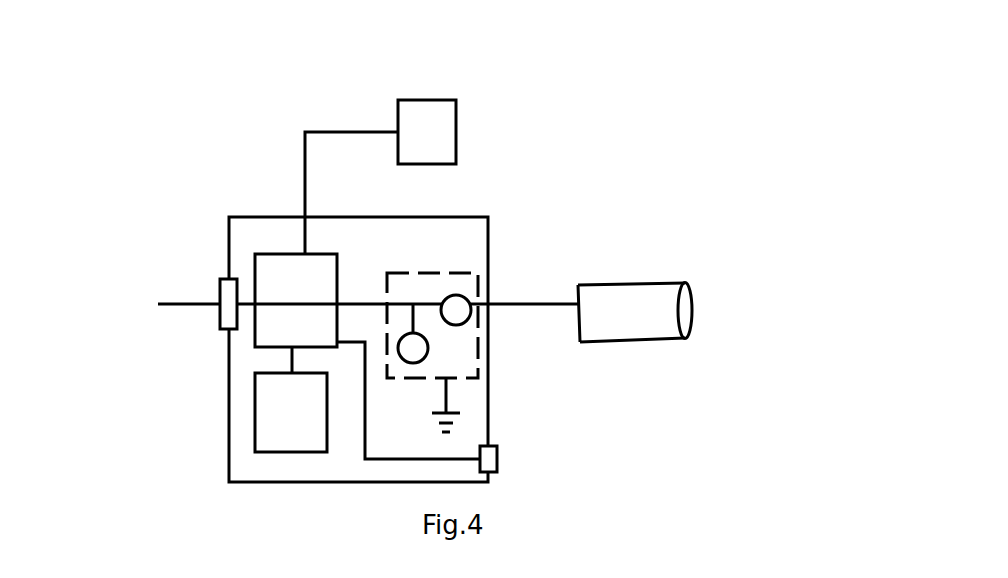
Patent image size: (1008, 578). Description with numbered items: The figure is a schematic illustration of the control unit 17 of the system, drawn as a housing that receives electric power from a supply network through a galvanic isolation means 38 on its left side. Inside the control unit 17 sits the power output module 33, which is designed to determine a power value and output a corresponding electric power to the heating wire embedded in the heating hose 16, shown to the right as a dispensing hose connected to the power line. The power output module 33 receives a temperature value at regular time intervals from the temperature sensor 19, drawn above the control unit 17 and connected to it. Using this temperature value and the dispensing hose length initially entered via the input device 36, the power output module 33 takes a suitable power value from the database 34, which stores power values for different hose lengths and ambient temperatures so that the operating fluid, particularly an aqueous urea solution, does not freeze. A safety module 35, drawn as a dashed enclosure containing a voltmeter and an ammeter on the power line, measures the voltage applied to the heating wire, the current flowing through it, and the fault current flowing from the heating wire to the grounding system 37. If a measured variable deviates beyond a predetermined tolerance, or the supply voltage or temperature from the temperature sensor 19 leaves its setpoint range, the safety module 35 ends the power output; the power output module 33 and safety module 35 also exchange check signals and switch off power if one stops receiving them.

The heating hose 16 is at (637, 268).
The control unit 17 is at (464, 295).
The temperature sensor 19 is at (503, 141).
The power output module 33 is at (286, 278).
The database 34 is at (314, 452).
The safety module 35 is at (534, 341).
The input device 36 is at (577, 494).
The grounding system 37 is at (557, 425).
The galvanic isolation means 38 is at (163, 248).